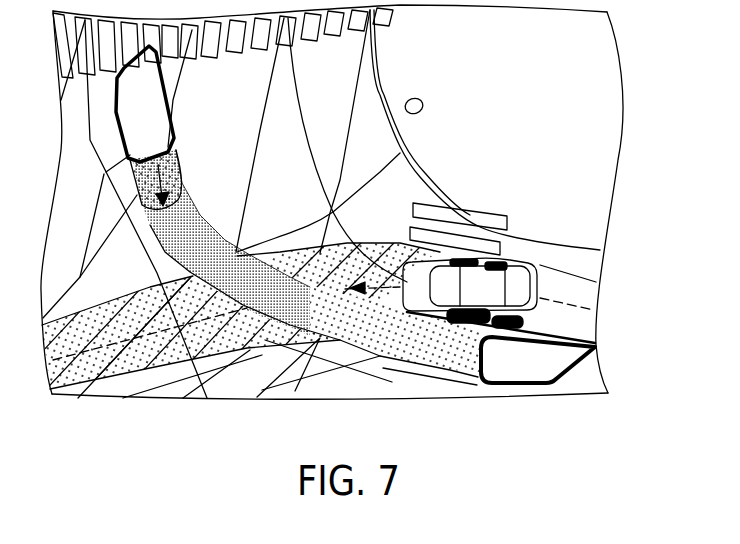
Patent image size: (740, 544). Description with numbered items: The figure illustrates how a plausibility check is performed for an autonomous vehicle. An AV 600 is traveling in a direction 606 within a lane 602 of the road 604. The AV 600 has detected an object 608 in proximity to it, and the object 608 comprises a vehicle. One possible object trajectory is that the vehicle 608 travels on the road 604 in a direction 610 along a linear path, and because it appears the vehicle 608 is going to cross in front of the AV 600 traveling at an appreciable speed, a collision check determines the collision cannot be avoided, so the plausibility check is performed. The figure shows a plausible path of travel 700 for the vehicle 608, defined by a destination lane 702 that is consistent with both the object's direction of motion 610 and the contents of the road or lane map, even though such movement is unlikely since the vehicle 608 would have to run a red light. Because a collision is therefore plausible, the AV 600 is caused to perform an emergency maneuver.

The AV 600 is at (522, 283).
The lane 602 is at (370, 232).
The road 604 is at (420, 177).
The direction 606 is at (380, 293).
The object 608 is at (155, 128).
The direction 610 is at (173, 167).
The plausible path of travel 700 is at (235, 265).
The destination lane 702 is at (215, 222).